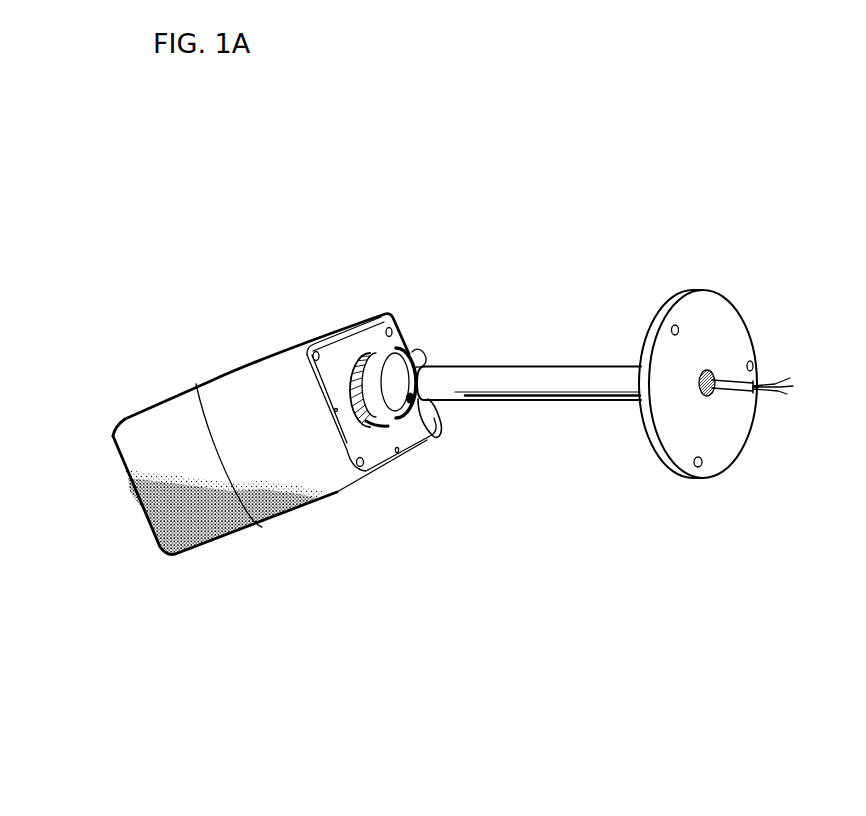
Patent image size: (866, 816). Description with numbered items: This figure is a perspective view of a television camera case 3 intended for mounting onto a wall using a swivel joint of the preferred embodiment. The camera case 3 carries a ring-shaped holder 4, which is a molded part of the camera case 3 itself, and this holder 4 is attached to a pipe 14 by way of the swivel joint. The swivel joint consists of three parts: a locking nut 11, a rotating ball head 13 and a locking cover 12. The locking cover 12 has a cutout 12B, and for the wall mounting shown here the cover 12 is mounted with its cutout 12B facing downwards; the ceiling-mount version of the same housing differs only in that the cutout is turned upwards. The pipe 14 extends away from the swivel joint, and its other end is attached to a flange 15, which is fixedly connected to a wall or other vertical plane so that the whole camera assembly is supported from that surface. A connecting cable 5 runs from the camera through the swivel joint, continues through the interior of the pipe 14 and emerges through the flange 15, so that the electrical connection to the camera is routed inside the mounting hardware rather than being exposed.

The camera case 3 is at (298, 491).
The ring-shaped holder 4 is at (372, 422).
The locking nut 11 is at (395, 425).
The locking cover 12 is at (412, 356).
The cutout 12B is at (421, 363).
The rotating ball head 13 is at (424, 420).
The pipe 14 is at (553, 383).
The flange 15 is at (725, 323).
The connecting cable 5 is at (742, 377).